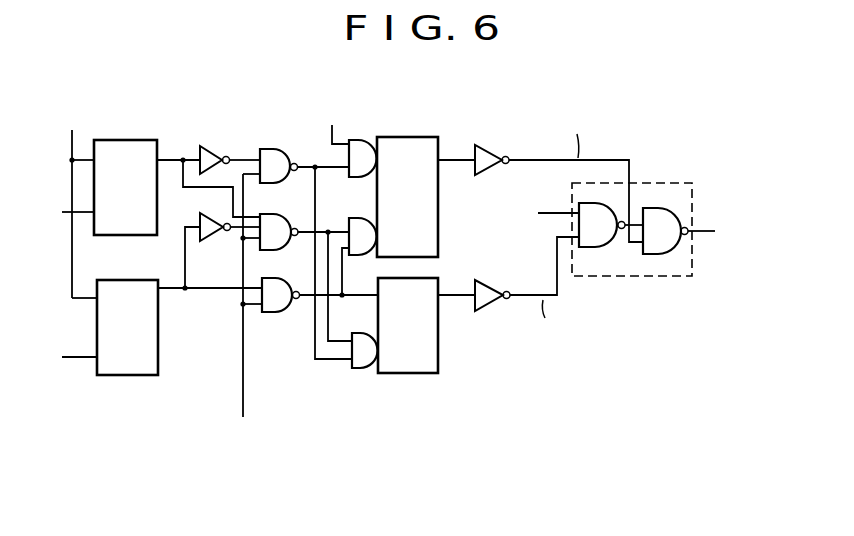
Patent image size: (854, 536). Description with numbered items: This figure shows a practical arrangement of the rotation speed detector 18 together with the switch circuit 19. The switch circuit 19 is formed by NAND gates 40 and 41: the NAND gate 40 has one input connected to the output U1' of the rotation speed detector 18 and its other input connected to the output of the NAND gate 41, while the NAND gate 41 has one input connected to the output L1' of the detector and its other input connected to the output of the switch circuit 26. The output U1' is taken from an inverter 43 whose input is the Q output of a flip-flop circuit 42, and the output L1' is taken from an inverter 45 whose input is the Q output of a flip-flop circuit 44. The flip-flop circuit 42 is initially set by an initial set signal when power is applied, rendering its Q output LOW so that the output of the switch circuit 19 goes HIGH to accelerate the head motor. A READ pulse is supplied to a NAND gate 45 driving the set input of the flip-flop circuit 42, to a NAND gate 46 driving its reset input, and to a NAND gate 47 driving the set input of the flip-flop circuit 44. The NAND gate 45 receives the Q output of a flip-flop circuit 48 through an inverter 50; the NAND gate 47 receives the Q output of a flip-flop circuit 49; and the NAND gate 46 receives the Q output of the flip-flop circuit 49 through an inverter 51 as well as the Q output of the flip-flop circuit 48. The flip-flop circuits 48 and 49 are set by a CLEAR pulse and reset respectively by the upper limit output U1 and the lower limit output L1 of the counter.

The rotation speed detector 18 is at (527, 86).
The switch circuit 19 is at (652, 251).
The switch circuit 26 is at (524, 213).
The NAND gate 40 is at (655, 218).
The NAND gate 41 is at (594, 244).
The flip-flop circuit 42 is at (424, 138).
The inverter 43 is at (489, 155).
The flip-flop circuit 44 is at (438, 356).
The inverter / NAND gate 45 is at (268, 153).
The NAND gate 46 is at (282, 226).
The NAND gate 47 is at (278, 308).
The flip-flop circuit 48 is at (137, 152).
The flip-flop circuit 49 is at (153, 340).
The inverter 50 is at (203, 150).
The inverter 51 is at (207, 237).